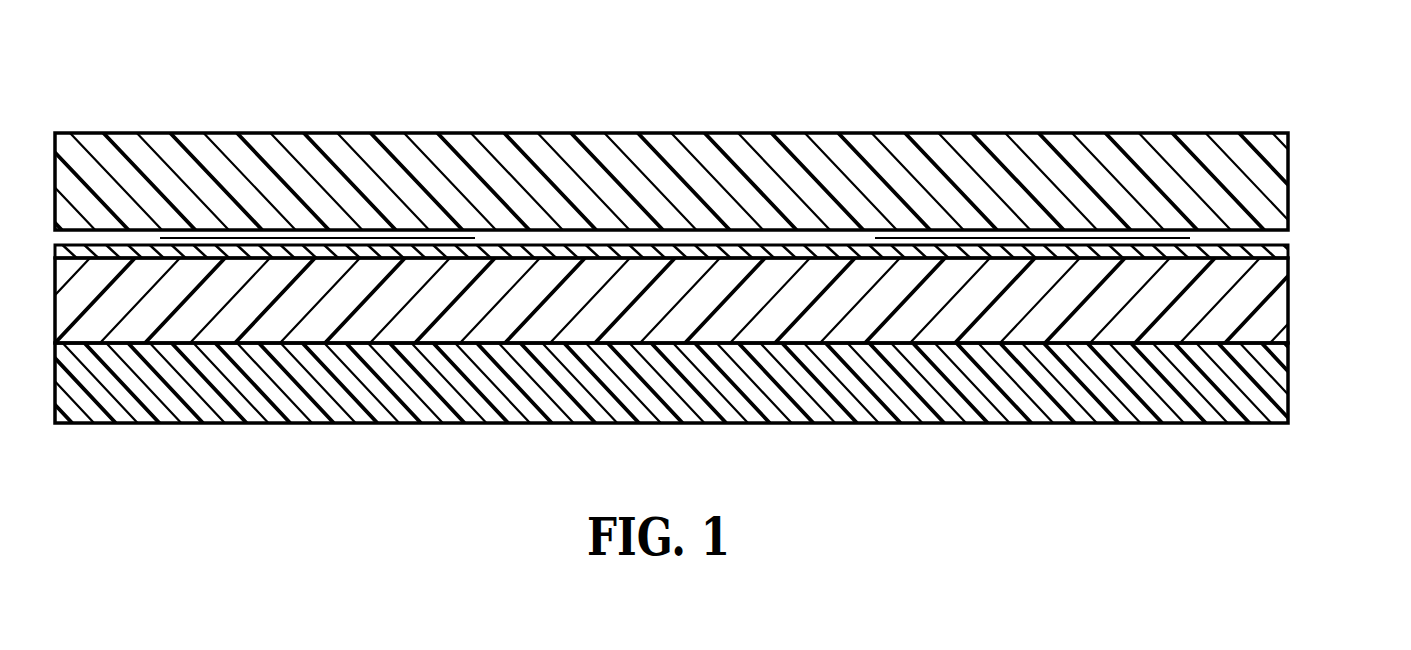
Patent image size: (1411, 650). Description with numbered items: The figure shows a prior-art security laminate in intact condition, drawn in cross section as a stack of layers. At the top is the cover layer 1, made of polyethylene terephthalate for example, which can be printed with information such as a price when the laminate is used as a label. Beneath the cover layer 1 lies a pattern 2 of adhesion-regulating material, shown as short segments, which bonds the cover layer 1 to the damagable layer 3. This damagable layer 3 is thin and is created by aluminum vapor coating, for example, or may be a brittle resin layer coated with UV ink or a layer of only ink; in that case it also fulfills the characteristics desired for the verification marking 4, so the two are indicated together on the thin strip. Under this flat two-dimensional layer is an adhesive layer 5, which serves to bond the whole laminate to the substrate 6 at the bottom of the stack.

The cover layer 1 is at (1232, 145).
The pattern of adhesion-regulating material 2 is at (1073, 237).
The damagable layer 3 is at (723, 250).
The verification marking 4 is at (1277, 252).
The adhesive layer 5 is at (1270, 303).
The substrate 6 is at (1268, 372).